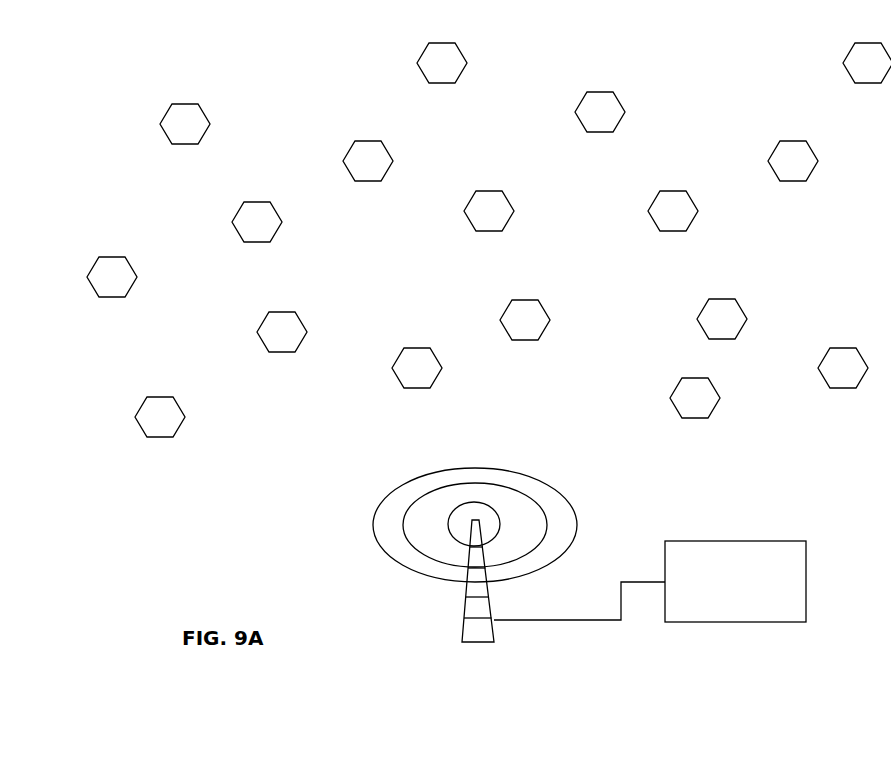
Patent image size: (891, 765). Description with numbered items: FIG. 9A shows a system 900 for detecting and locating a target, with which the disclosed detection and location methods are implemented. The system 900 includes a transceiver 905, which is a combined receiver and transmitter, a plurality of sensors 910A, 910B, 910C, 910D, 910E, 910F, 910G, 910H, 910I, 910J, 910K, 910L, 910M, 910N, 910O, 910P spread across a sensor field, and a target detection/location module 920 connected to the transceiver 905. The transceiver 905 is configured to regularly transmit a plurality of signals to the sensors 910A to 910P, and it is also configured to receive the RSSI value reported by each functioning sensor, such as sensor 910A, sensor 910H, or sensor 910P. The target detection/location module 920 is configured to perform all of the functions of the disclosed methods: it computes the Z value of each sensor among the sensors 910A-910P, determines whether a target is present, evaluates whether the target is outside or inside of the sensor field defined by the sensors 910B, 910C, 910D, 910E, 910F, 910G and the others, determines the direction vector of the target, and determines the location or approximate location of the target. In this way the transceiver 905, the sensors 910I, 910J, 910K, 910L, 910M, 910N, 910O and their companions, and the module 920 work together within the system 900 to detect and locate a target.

The system 900 is at (128, 565).
The transceiver 905 is at (462, 640).
The sensor 910A is at (113, 257).
The sensor 910B is at (259, 202).
The sensor 910C is at (187, 104).
The sensor 910D is at (162, 397).
The sensor 910E is at (370, 181).
The sensor 910F is at (417, 63).
The sensor 910G is at (490, 191).
The sensor 910H is at (415, 348).
The sensor 910I is at (550, 320).
The sensor 910J is at (601, 92).
The sensor 910K is at (675, 191).
The sensor 910L is at (723, 299).
The sensor 910M is at (795, 181).
The sensor 910N is at (843, 348).
The sensor 910O is at (843, 63).
The sensor 910P is at (670, 398).
The target detection/location module 920 is at (806, 582).